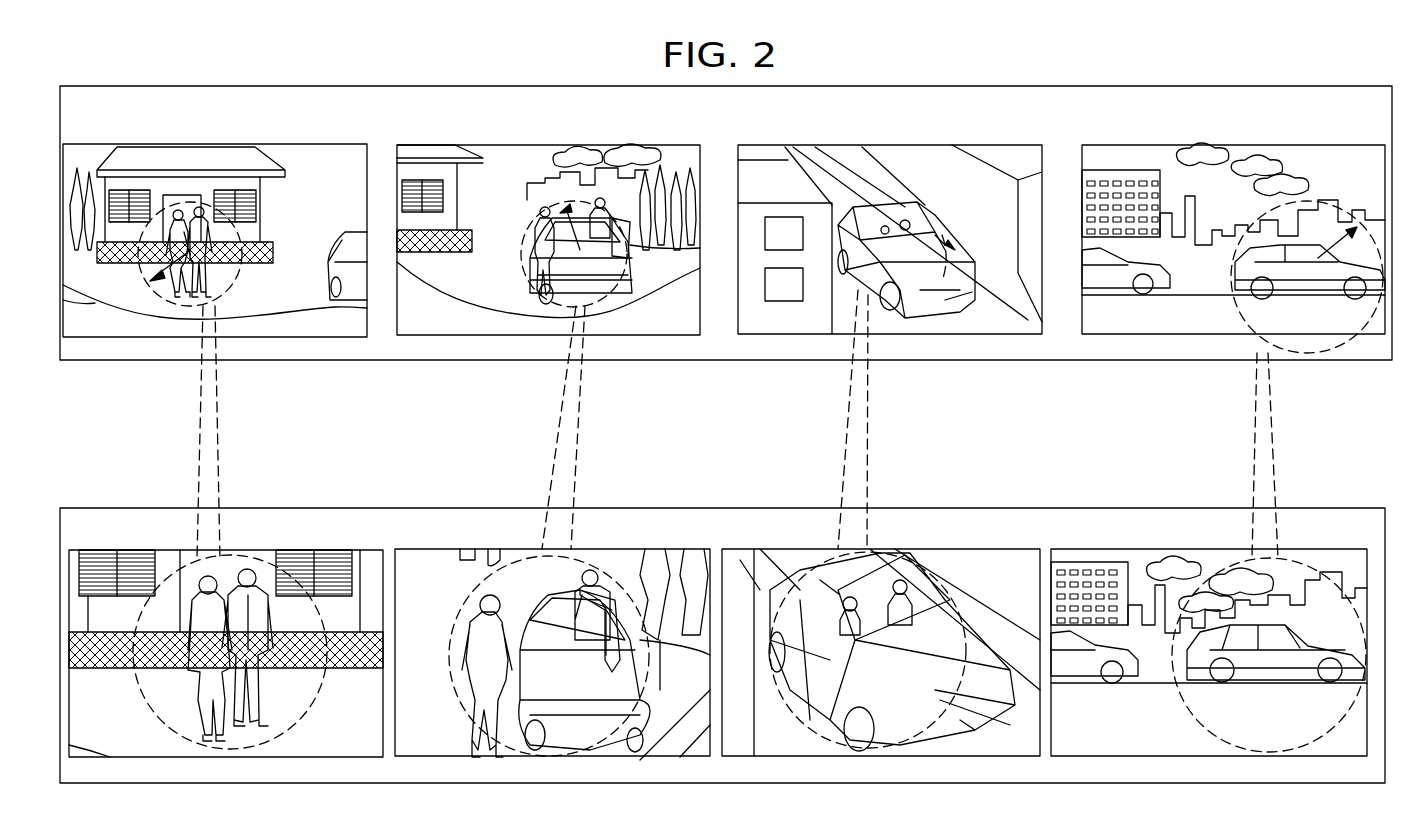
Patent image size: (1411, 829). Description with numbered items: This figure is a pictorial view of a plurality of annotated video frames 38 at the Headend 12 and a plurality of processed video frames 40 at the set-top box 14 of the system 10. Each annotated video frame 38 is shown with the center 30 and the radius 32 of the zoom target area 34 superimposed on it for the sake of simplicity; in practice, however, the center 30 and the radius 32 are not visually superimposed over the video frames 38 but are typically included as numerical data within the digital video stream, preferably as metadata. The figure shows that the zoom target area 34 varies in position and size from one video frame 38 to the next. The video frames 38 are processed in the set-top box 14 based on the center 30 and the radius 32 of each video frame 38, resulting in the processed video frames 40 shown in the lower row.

The system 10 is at (735, 458).
The Headend 12 is at (164, 86).
The set-top box 14 is at (153, 508).
The center 30 is at (202, 266).
The radius 32 is at (167, 302).
The zoom target area 34 is at (238, 272).
The annotated video frames 38 is at (332, 337).
The processed video frames 40 is at (427, 549).